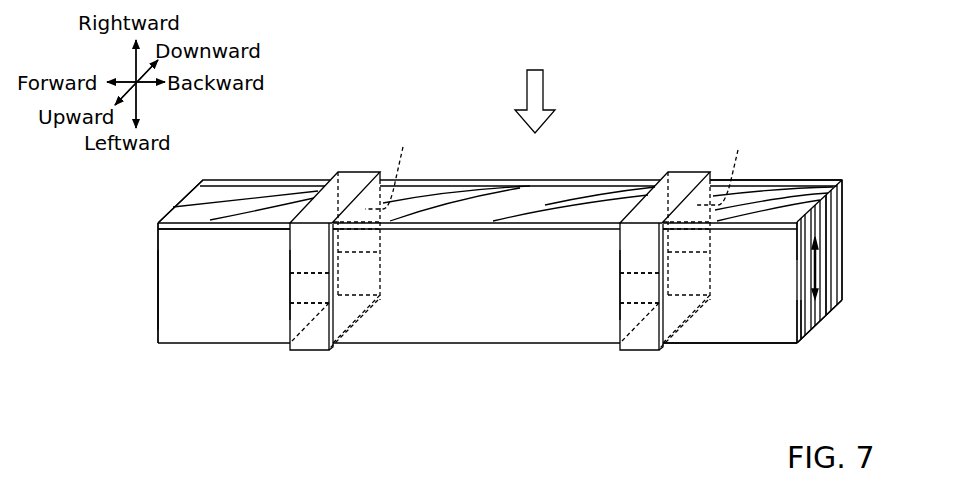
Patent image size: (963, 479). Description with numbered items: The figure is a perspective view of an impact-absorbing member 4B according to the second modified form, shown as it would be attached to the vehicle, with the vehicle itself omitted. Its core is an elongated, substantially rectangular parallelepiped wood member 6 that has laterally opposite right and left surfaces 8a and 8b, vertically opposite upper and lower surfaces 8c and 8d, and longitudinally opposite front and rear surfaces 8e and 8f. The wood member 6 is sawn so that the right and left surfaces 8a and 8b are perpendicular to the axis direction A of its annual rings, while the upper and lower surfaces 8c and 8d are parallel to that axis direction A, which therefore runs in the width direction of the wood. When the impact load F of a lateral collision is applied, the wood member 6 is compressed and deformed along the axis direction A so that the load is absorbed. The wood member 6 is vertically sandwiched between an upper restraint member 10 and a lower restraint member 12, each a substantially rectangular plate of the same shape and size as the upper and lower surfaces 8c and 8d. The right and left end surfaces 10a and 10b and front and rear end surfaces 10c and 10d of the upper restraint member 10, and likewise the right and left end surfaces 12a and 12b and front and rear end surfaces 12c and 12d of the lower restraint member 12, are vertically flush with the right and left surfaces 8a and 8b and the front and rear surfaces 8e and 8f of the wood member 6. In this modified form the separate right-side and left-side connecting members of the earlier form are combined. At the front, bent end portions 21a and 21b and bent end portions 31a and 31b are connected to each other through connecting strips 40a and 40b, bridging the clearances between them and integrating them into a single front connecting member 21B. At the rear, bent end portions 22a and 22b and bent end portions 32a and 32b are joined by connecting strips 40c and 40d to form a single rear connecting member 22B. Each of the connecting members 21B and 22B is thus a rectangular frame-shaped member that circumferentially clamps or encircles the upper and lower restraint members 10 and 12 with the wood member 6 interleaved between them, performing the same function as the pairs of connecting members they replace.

The impact-absorbing member 4B is at (772, 115).
The wood member 6 is at (227, 208).
The right surface 8a is at (587, 205).
The left surface 8b is at (824, 320).
The upper surface 8c is at (799, 321).
The lower surface 8d is at (838, 262).
The front surface 8e is at (158, 270).
The rear surface 8f is at (831, 232).
The upper restraint member 10 is at (482, 220).
The right end surface 10a is at (203, 220).
The left end surface 10b is at (800, 343).
The front end surface 10c is at (160, 228).
The rear end surface 10d is at (797, 242).
The lower restraint member 12 is at (438, 178).
The right end surface 12a is at (788, 183).
The left end surface 12b is at (845, 303).
The front end surface 12c is at (203, 180).
The rear end surface 12d is at (845, 196).
The front connecting member 21B is at (358, 170).
The bent end portion 21a is at (302, 252).
The bent end portion 21b is at (396, 166).
The rear connecting member 22B is at (690, 168).
The bent end portion 22a is at (628, 252).
The bent end portion 22b is at (729, 166).
The bent end portion 31a is at (300, 320).
The bent end portion 31b is at (360, 272).
The bent end portion 32a is at (628, 320).
The bent end portion 32b is at (688, 272).
The connecting strip 40a is at (307, 287).
The connecting strip 40b is at (365, 238).
The connecting strip 40c is at (635, 287).
The connecting strip 40d is at (693, 237).
The axis direction of annual rings A is at (815, 270).
The impact load F is at (540, 82).